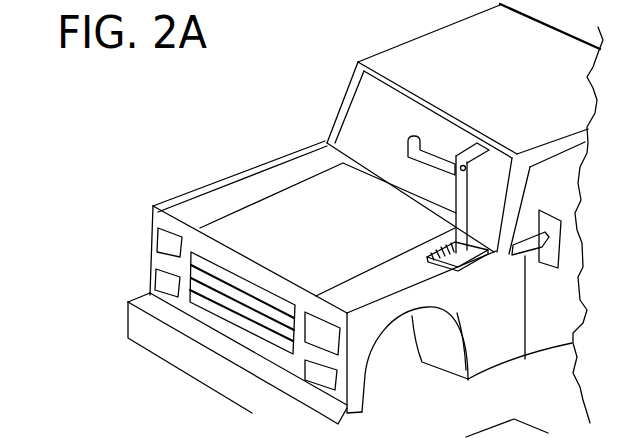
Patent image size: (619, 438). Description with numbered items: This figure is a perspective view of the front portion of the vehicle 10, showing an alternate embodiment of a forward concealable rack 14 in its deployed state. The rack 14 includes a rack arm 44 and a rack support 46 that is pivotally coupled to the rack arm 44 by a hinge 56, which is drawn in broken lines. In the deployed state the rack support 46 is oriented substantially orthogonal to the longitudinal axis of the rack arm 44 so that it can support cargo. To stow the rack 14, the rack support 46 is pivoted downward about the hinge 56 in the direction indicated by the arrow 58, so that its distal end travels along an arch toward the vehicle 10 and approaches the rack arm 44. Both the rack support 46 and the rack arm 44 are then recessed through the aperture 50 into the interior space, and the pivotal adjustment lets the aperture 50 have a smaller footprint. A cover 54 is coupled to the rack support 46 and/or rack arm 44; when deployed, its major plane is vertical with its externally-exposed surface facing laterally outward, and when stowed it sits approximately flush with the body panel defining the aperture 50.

The vehicle 10 is at (332, 102).
The rack 14 is at (495, 158).
The rack arm 44 is at (454, 230).
The rack support 46 is at (450, 180).
The aperture 50 is at (437, 259).
The cover 54 is at (526, 181).
The hinge 56 is at (466, 165).
The arrow 58 is at (450, 197).